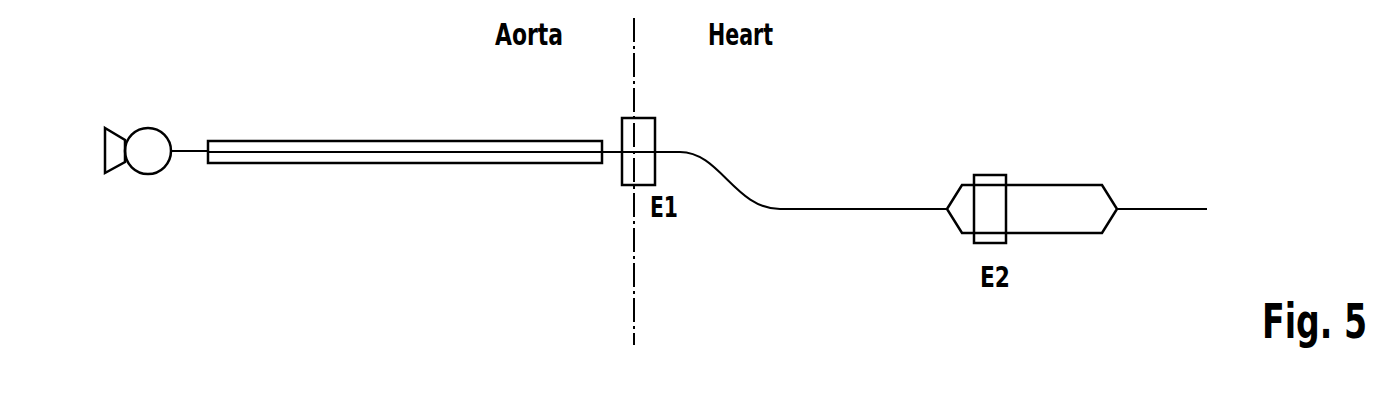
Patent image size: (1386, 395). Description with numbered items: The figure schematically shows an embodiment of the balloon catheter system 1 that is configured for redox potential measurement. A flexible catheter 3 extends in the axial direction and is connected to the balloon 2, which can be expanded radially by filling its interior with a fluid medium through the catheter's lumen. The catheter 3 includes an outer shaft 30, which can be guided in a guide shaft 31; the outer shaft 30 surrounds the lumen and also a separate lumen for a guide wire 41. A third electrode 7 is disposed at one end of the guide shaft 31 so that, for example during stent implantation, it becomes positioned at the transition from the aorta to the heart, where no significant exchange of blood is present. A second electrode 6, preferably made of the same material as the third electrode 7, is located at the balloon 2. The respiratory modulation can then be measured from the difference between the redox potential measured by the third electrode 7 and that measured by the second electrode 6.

The balloon catheter system 1 is at (224, 110).
The flexible catheter 3 is at (299, 118).
The guide shaft 31 is at (356, 118).
The third electrode 7 is at (642, 118).
The outer shaft 30 is at (849, 183).
The balloon 2 is at (1056, 185).
The second electrode 6 is at (990, 175).
The guide wire 41 is at (1184, 186).